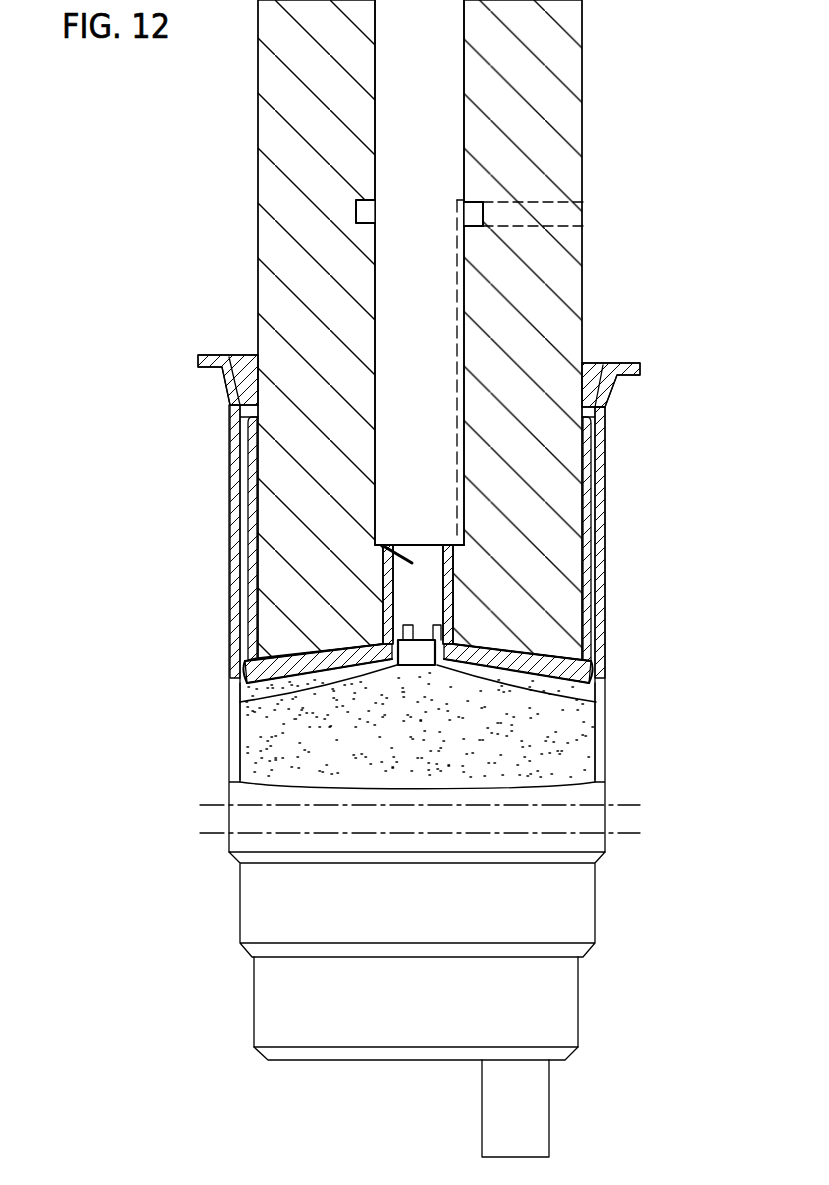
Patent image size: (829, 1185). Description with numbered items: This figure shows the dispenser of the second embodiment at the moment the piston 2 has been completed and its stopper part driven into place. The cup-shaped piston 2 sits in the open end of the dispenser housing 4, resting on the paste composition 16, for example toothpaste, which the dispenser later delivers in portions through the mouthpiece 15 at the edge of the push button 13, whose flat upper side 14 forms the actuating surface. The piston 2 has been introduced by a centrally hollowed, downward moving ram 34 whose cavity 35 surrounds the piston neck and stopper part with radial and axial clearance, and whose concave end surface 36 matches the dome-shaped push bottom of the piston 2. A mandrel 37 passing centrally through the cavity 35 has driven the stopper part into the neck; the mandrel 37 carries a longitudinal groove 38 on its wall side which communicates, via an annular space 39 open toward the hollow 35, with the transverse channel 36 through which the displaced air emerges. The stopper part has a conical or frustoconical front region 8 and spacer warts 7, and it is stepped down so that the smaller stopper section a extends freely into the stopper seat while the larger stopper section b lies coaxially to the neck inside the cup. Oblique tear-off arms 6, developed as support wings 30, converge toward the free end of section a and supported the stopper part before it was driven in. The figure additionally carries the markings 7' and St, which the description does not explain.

The piston 2 is at (575, 919).
The dispenser housing 4 is at (605, 763).
The tear-off arms 6 is at (255, 645).
The spacer warts 7 is at (294, 573).
The liner 7' is at (364, 494).
The front region 8 is at (252, 588).
The push button 13 is at (275, 998).
The flat upper side 14 is at (307, 1062).
The mouthpiece 15 is at (522, 1123).
The paste composition 16 is at (568, 772).
The support wings 30 is at (240, 698).
The ram 34 is at (562, 168).
The cavity 35 is at (452, 576).
The end surface 36 is at (568, 215).
The mandrel 37 is at (403, 280).
The longitudinal groove 38 is at (457, 275).
The annular space 39 is at (355, 206).
The punch stroke St is at (386, 546).
The stopper section a is at (399, 665).
The stopper section b is at (432, 585).